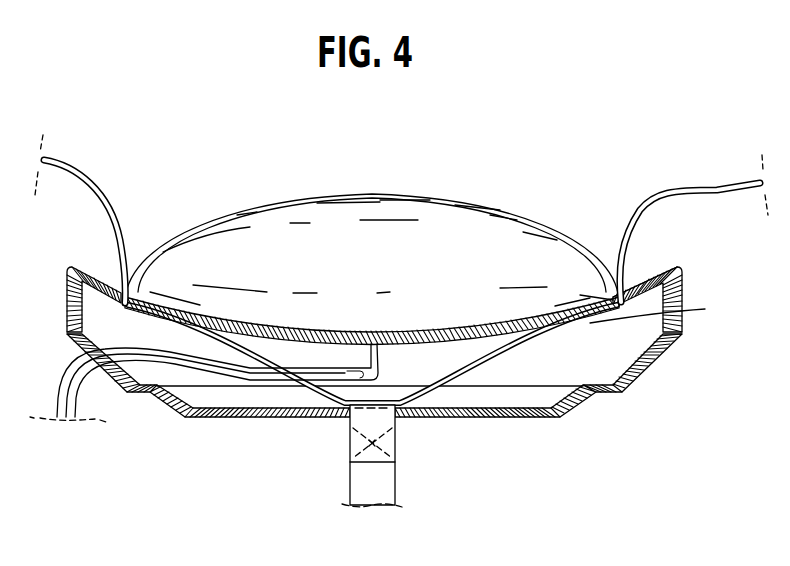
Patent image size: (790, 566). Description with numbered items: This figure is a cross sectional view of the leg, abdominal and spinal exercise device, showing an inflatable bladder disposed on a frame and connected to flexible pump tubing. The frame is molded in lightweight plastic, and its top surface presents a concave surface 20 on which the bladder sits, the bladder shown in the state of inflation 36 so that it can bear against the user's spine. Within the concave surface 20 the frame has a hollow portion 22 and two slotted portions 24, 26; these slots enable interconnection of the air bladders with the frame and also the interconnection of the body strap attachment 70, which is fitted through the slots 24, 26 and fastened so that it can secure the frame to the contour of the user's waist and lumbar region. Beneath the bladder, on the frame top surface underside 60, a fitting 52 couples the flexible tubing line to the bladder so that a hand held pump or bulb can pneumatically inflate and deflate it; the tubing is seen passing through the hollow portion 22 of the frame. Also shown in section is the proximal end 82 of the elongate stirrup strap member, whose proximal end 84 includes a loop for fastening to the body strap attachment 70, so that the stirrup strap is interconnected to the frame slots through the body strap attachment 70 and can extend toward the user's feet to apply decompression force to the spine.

The concave surface 20 is at (681, 310).
The hollow portion 22 is at (610, 352).
The slotted portion 24 is at (627, 287).
The slotted portion 26 is at (118, 285).
The inflation 36 is at (318, 220).
The fitting 52 is at (378, 352).
The frame top surface underside 60 is at (443, 347).
The body strap attachment 70 is at (70, 163).
The proximal end 82 is at (382, 477).
The proximal end 84 is at (355, 443).